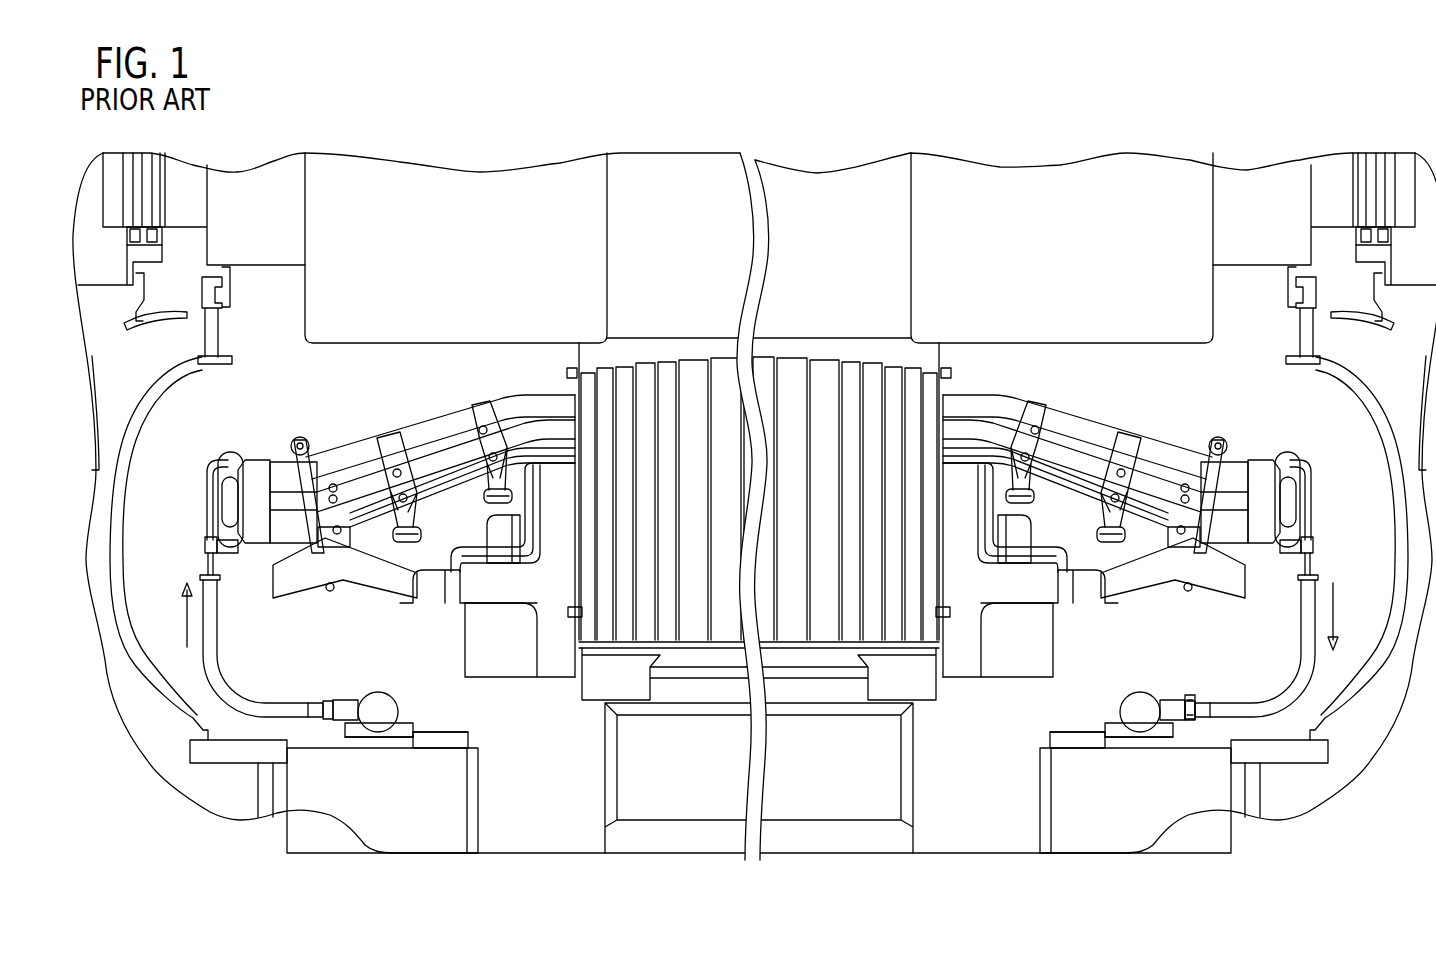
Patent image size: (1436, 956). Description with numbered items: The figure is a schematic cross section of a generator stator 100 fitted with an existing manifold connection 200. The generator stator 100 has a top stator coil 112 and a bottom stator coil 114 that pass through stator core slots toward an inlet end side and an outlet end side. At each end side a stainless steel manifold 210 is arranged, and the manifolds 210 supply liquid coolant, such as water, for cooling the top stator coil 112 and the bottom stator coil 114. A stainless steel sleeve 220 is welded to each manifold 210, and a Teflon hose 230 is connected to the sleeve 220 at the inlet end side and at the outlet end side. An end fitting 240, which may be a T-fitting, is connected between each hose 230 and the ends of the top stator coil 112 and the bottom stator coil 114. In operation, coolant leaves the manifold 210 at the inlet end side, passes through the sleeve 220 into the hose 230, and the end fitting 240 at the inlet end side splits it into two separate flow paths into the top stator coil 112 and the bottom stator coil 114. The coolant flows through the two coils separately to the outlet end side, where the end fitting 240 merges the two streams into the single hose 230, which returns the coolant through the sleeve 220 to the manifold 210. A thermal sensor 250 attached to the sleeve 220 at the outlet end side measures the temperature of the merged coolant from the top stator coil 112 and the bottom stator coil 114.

The generator stator 100 is at (1125, 97).
The top stator coil 112 is at (350, 447).
The bottom stator coil 114 is at (443, 430).
The existing manifold connection 200 is at (327, 721).
The manifold 210 is at (400, 703).
The sleeve 220 is at (348, 703).
The hose 230 is at (218, 645).
The end fitting 240 is at (204, 508).
The thermal sensor 250 is at (1190, 693).